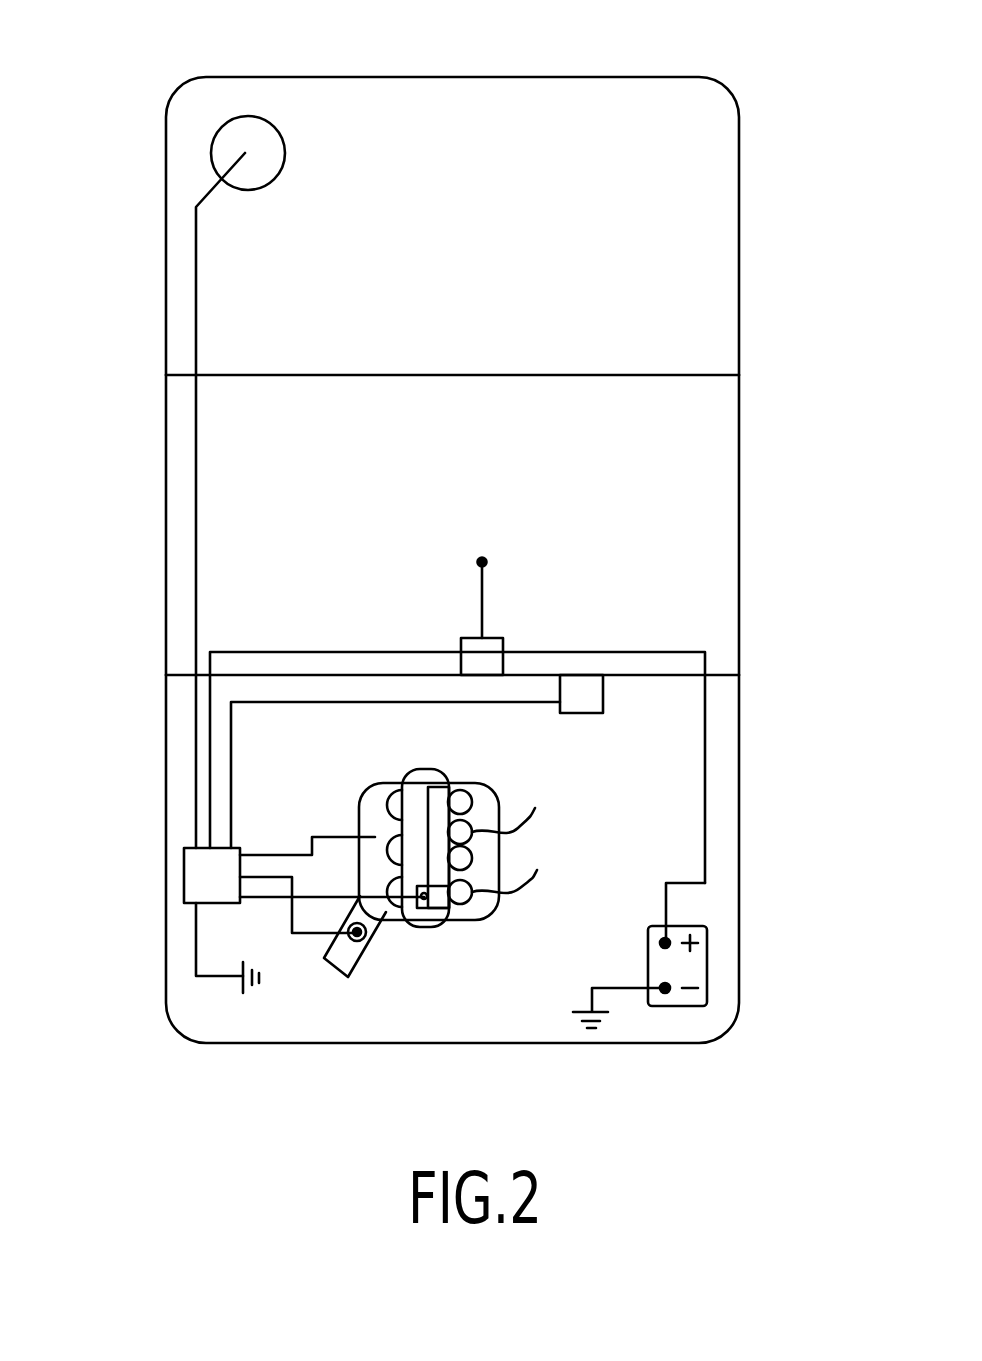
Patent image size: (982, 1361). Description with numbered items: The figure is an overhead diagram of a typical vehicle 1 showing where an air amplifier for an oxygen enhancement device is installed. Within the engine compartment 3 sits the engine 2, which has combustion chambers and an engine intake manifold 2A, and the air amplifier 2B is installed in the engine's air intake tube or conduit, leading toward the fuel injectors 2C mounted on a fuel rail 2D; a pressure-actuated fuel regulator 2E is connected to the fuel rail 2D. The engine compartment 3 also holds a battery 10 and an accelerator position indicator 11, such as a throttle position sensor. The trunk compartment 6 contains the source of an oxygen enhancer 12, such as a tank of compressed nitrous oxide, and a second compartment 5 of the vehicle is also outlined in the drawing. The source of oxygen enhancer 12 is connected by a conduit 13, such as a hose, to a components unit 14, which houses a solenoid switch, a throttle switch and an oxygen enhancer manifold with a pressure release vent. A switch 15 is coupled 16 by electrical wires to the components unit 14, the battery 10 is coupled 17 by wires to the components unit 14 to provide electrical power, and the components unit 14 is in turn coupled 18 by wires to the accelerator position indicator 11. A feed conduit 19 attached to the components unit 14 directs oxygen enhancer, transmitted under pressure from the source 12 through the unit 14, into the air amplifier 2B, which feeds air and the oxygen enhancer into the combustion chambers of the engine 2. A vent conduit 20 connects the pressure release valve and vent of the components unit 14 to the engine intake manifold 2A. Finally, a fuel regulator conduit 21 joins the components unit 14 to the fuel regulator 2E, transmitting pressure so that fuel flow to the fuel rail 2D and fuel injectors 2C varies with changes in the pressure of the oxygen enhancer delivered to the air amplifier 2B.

The vehicle 1 is at (255, 1077).
The engine 2 is at (480, 912).
The engine intake manifold 2A is at (360, 790).
The air amplifier 2B is at (337, 960).
The fuel injectors 2C is at (472, 802).
The fuel rail 2D is at (438, 795).
The fuel regulator 2E is at (436, 908).
The engine compartment 3 is at (520, 1045).
The lower compartment 5 is at (716, 466).
The trunk compartment 6 is at (708, 217).
The battery 10 is at (707, 970).
The accelerator position indicator 11 is at (585, 713).
The source of an oxygen enhancer 12 is at (247, 117).
The conduit 13 is at (195, 283).
The components unit 14 is at (198, 872).
The switch 15 is at (461, 638).
The coupling 16 is at (253, 650).
The coupling 17 is at (575, 650).
The coupling 18 is at (255, 703).
The feed conduit 19 is at (297, 935).
The vent conduit 20 is at (265, 850).
The fuel regulator conduit 21 is at (252, 918).